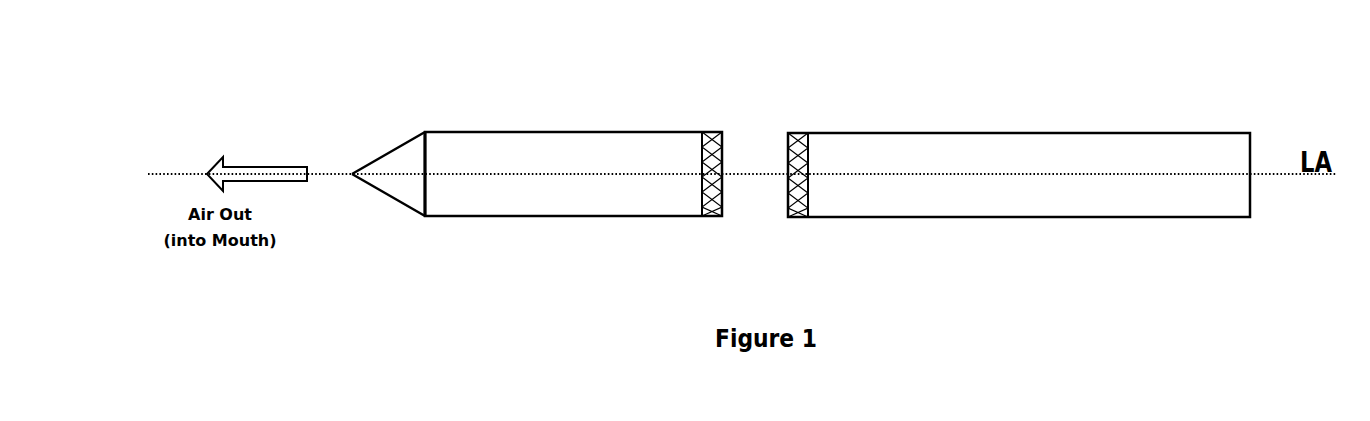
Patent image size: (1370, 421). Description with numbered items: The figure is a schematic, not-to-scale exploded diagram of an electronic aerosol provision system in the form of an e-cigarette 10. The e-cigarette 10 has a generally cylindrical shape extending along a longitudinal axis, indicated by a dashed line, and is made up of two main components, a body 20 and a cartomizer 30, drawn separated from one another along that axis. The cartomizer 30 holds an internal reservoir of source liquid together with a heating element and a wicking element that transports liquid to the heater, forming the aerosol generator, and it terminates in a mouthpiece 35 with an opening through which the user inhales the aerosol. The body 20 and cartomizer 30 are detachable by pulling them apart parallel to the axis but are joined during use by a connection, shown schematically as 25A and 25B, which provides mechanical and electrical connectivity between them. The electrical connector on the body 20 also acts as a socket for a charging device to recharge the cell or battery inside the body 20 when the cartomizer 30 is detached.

The e-cigarette 10 is at (782, 196).
The body 20 is at (1033, 217).
The connection (cartomizer side) 25A is at (710, 217).
The connection (body side) 25B is at (808, 133).
The cartomizer 30 is at (562, 132).
The mouthpiece 35 is at (400, 175).